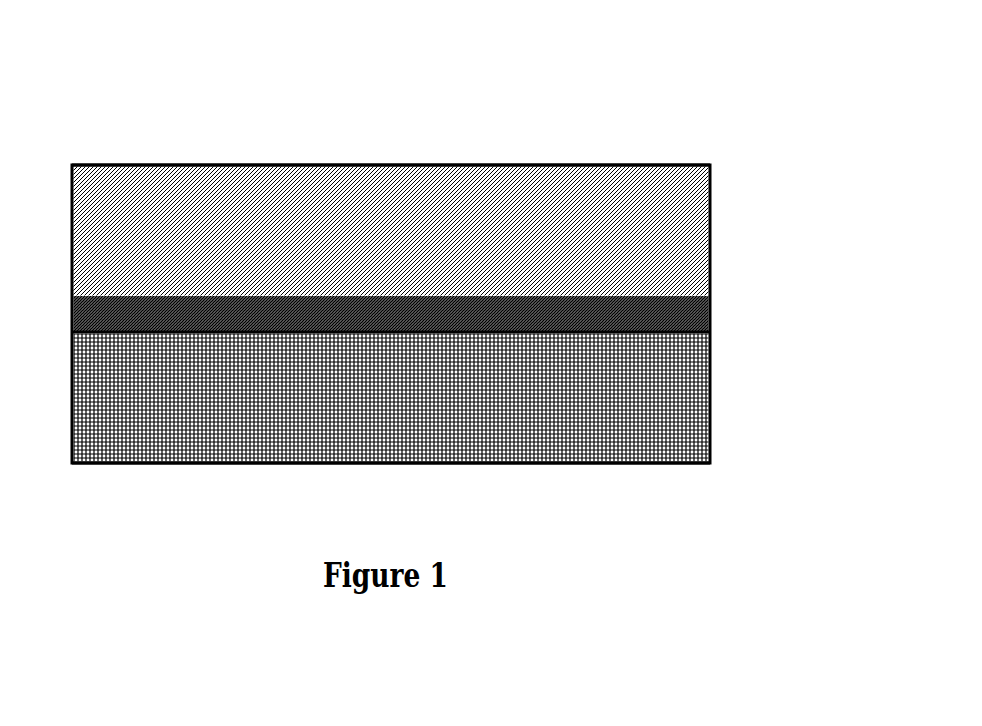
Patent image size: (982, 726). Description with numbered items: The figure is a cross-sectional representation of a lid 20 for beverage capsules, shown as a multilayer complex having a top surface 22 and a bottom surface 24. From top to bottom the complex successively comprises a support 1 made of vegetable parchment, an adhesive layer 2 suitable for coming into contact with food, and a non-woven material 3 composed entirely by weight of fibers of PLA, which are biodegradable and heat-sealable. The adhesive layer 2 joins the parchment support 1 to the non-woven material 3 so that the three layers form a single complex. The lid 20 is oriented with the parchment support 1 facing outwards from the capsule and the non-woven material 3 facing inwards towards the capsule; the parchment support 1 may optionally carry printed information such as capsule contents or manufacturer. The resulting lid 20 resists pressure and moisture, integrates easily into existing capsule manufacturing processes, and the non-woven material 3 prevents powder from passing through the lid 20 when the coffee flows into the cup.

The lid 20 is at (128, 62).
The top surface 22 is at (472, 163).
The bottom surface 24 is at (160, 464).
The vegetable parchment support 1 is at (635, 226).
The adhesive layer 2 is at (636, 320).
The non-woven material 3 is at (636, 410).